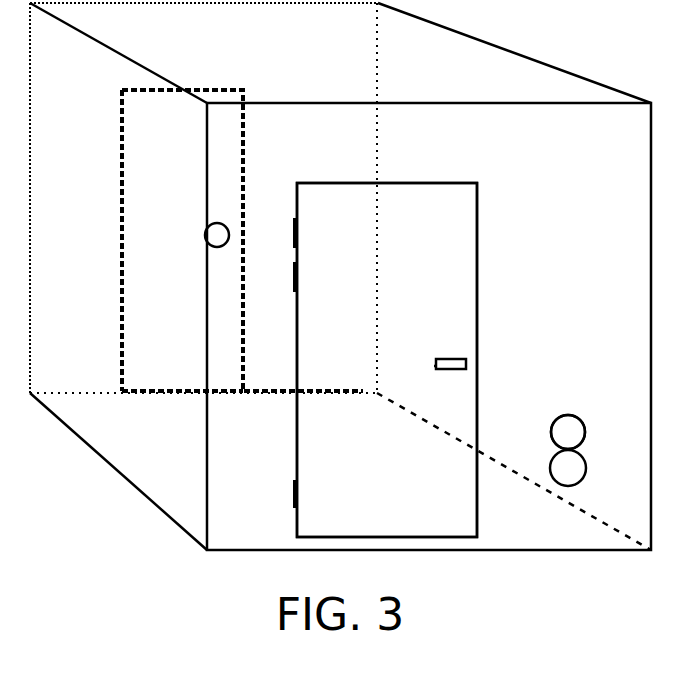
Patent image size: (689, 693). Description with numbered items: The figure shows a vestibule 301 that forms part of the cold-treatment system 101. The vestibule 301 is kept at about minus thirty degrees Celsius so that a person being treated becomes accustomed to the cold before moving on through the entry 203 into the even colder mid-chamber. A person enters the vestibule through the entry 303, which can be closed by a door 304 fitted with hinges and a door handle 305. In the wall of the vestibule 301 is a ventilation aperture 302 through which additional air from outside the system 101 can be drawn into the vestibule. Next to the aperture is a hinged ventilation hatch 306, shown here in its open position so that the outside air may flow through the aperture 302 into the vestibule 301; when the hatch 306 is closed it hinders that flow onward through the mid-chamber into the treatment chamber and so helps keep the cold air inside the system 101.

The system 101 is at (617, 58).
The vestibule 301 is at (529, 58).
The entry to mid-chamber 203 is at (176, 283).
The entry to the vestibule 303 is at (386, 440).
The door 304 is at (417, 263).
The door handle 305 is at (450, 359).
The ventilation aperture 302 is at (568, 415).
The ventilation hatch 306 is at (556, 480).